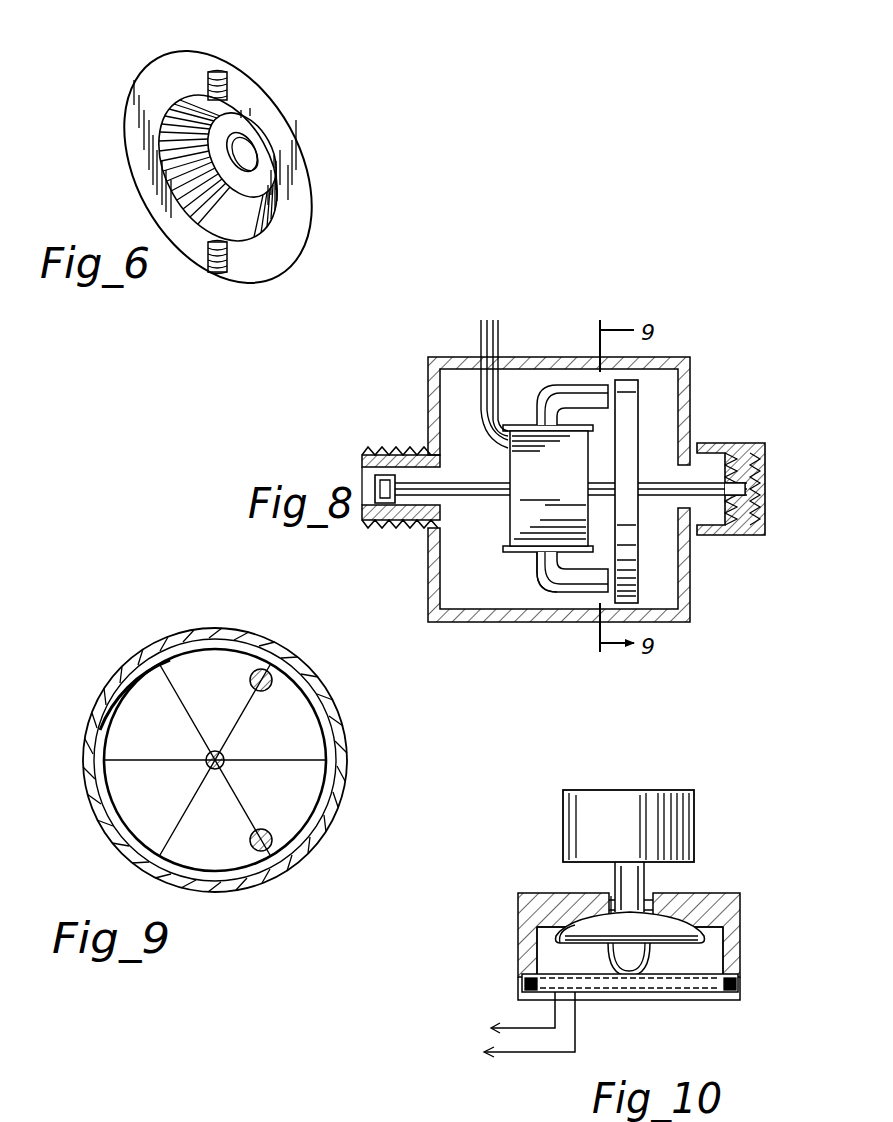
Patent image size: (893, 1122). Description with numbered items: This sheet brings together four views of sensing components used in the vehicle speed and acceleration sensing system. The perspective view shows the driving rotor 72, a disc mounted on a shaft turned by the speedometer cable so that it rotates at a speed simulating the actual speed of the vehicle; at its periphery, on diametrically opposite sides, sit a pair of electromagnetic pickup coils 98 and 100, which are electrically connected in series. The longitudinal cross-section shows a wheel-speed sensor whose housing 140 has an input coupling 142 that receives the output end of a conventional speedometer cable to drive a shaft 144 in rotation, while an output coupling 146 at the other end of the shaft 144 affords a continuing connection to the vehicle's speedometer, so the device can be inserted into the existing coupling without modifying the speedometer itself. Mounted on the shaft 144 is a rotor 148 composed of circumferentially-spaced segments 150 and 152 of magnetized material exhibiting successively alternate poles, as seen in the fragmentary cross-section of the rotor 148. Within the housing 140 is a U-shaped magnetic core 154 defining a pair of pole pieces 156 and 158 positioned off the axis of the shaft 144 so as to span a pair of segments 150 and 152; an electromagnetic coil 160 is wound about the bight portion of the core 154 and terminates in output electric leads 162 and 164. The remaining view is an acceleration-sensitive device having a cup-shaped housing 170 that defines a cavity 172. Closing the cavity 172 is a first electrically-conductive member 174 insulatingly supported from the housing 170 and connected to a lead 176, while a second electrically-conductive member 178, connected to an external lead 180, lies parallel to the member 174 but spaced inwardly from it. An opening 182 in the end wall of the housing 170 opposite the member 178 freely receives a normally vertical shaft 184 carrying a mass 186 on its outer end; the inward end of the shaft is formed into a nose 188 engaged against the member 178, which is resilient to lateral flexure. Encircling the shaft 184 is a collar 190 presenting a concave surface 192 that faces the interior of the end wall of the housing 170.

In FIG. 6, the driving rotor 72 is at (296, 156).
In FIG. 6, the electromagnetic pickup coil 98 is at (227, 90).
In FIG. 6, the electromagnetic pickup coil 100 is at (208, 264).
In FIG. 8, the housing 140 is at (428, 388).
In FIG. 8, the input coupling 142 is at (392, 458).
In FIG. 8, the shaft 144 is at (463, 496).
In FIG. 9, the shaft 144 is at (224, 755).
In FIG. 8, the output coupling 146 is at (718, 548).
In FIG. 8, the rotor 148 is at (640, 420).
In FIG. 9, the rotor 148 is at (186, 650).
In FIG. 9, the segment 150 is at (232, 660).
In FIG. 9, the segment 152 is at (103, 720).
In FIG. 8, the U-shaped magnetic core 154 is at (550, 562).
In FIG. 8, the pole piece 156 is at (596, 393).
In FIG. 9, the pole piece 156 is at (273, 678).
In FIG. 8, the pole piece 158 is at (592, 600).
In FIG. 9, the pole piece 158 is at (270, 850).
In FIG. 8, the electromagnetic coil 160 is at (516, 530).
In FIG. 8, the output electric lead 162 is at (480, 340).
In FIG. 8, the output electric lead 164 is at (501, 340).
In FIG. 10, the cup-shaped housing 170 is at (736, 905).
In FIG. 10, the cavity 172 is at (536, 935).
In FIG. 10, the first electrically-conductive member 174 is at (612, 993).
In FIG. 10, the lead 176 is at (520, 1052).
In FIG. 10, the second electrically-conductive member 178 is at (698, 993).
In FIG. 10, the external lead 180 is at (512, 1027).
In FIG. 10, the opening 182 is at (610, 905).
In FIG. 10, the shaft 184 is at (640, 887).
In FIG. 10, the mass 186 is at (668, 790).
In FIG. 10, the nose 188 is at (640, 976).
In FIG. 10, the collar 190 is at (673, 924).
In FIG. 10, the concave surface 192 is at (576, 928).